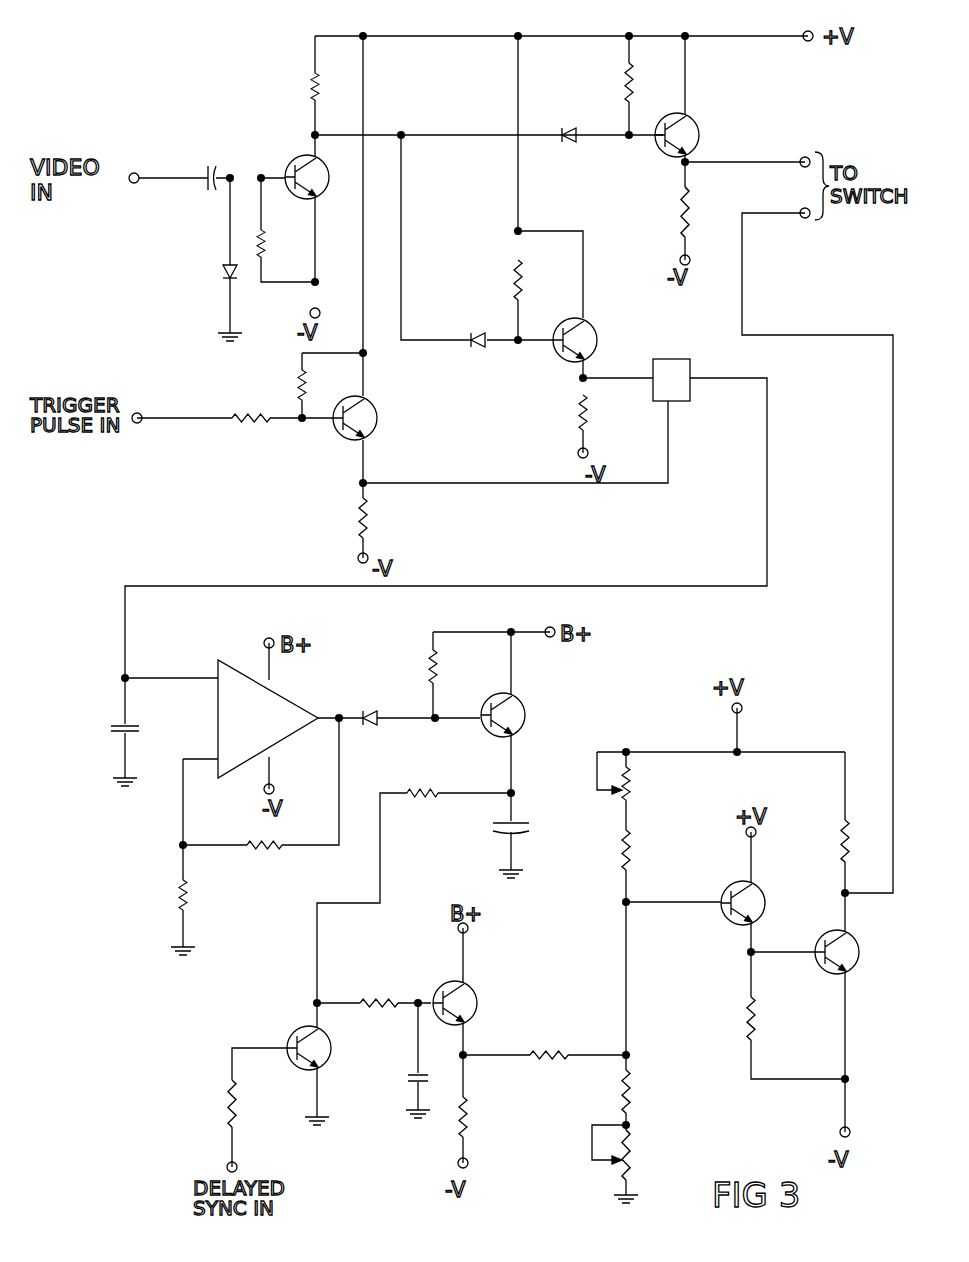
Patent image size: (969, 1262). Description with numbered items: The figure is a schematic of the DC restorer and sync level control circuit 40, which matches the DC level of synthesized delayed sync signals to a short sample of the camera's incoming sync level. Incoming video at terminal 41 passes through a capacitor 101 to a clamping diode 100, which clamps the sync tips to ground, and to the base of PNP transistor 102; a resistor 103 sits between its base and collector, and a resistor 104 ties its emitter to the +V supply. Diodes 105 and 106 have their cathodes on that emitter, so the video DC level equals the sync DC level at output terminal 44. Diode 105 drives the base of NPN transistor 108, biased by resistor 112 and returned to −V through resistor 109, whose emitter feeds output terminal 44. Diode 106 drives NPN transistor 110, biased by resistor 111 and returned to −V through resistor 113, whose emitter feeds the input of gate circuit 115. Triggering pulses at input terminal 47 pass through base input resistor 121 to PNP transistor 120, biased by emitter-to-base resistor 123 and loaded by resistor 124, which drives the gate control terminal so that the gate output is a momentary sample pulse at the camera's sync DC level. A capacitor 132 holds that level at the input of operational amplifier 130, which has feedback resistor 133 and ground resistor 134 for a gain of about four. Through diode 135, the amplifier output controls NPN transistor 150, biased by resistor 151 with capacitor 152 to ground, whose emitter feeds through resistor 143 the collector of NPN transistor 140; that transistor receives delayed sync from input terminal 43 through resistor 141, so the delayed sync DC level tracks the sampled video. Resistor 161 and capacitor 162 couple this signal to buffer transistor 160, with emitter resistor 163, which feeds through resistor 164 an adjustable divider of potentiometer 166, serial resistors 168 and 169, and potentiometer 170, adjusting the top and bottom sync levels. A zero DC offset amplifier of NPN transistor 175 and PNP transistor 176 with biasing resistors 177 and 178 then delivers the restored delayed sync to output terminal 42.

The circuit 40 is at (220, 520).
The terminal 41 is at (134, 173).
The output terminal 42 is at (802, 210).
The delayed sync input terminal 43 is at (240, 1168).
The output terminal 44 is at (802, 158).
The input terminal 47 is at (141, 424).
The clamping diode 100 is at (222, 266).
The capacitor 101 is at (208, 165).
The PNP transistor 102 is at (316, 191).
The resistor 103 is at (267, 246).
The resistor 104 is at (313, 82).
The diode 105 is at (570, 148).
The diode 106 is at (478, 332).
The NPN transistor 108 is at (691, 131).
The resistor 109 is at (683, 219).
The NPN transistor 110 is at (591, 327).
The base bias resistor 111 is at (516, 275).
The base bias resistor 112 is at (626, 72).
The resistor 113 is at (580, 411).
The gate circuit 115 is at (664, 358).
The PNP transistor 120 is at (378, 413).
The base input resistor 121 is at (241, 413).
The emitter-to-base resistor 123 is at (298, 373).
The resistor 124 is at (368, 528).
The operational amplifier 130 is at (228, 672).
The capacitor 132 is at (112, 733).
The feedback resistor 133 is at (262, 858).
The resistor 134 is at (190, 906).
The diode 135 is at (372, 710).
The NPN transistor 140 is at (318, 1058).
The resistor 141 is at (228, 1109).
The resistor 143 is at (417, 790).
The NPN transistor 150 is at (513, 713).
The base-to-collector resistor 151 is at (431, 663).
The capacitor 152 is at (531, 830).
The NPN transistor 160 is at (478, 1004).
The resistor 161 is at (376, 998).
The capacitor 162 is at (410, 1086).
The resistor 163 is at (468, 1126).
The resistor 164 is at (552, 1050).
The potentiometer 166 is at (637, 794).
The resistor 168 is at (634, 853).
The resistor 169 is at (634, 1086).
The potentiometer 170 is at (634, 1161).
The NPN transistor 175 is at (766, 906).
The PNP transistor 176 is at (860, 958).
The biasing resistor 177 is at (757, 1021).
The biasing resistor 178 is at (841, 849).